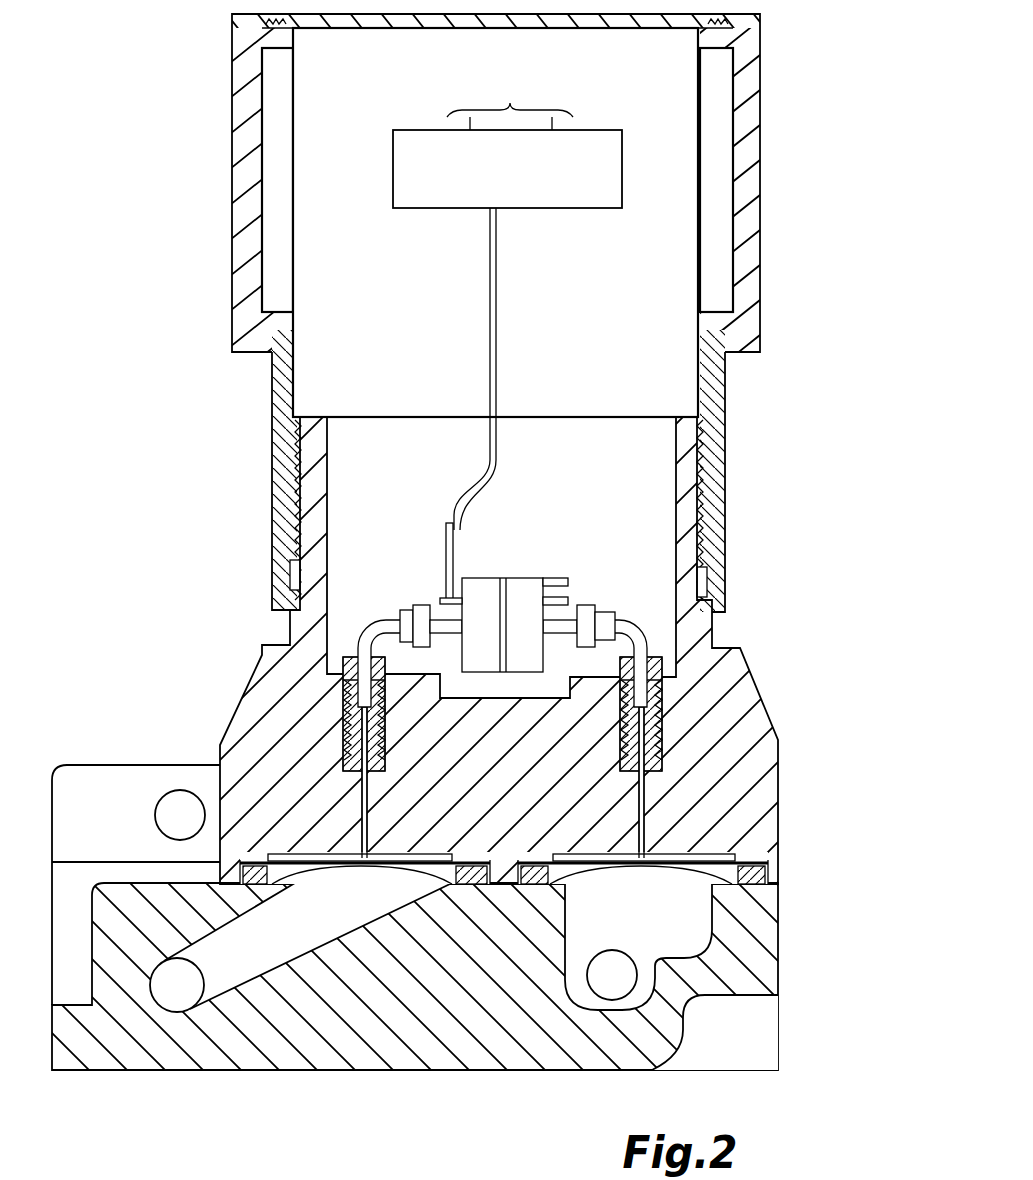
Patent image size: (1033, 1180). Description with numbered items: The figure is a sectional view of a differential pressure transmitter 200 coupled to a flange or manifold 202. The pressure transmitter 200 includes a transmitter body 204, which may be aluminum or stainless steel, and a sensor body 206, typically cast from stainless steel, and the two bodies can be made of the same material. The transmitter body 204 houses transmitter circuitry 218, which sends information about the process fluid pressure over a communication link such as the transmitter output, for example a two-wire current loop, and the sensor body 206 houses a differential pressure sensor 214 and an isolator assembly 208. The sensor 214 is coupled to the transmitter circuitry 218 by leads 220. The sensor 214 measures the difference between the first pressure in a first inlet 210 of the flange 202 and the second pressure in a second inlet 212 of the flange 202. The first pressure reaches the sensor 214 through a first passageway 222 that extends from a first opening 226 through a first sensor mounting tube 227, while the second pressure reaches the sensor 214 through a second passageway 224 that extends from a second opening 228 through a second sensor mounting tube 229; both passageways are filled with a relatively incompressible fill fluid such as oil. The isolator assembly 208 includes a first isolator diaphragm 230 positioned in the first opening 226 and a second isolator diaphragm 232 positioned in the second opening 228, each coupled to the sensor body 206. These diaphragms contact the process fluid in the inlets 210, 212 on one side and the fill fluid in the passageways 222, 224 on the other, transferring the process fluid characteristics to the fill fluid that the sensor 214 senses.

The pressure transmitter 200 is at (784, 202).
The flange or manifold 202 is at (108, 803).
The transmitter body 204 is at (763, 100).
The sensor body 206 is at (742, 670).
The isolator assembly 208 is at (774, 891).
The first inlet 210 is at (222, 955).
The second inlet 212 is at (641, 939).
The differential pressure sensor 214 is at (483, 594).
The transmitter circuitry 218 is at (623, 156).
The leads 220 is at (498, 268).
The first passageway 222 is at (345, 745).
The second passageway 224 is at (642, 733).
The first opening 226 is at (345, 878).
The first sensor mounting tube 227 is at (364, 631).
The second opening 228 is at (641, 862).
The second sensor mounting tube 229 is at (628, 621).
The first isolator diaphragm 230 is at (410, 862).
The second isolator diaphragm 232 is at (682, 862).